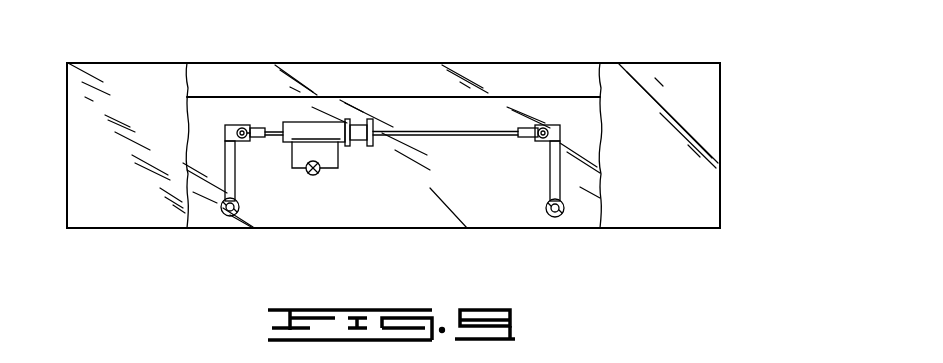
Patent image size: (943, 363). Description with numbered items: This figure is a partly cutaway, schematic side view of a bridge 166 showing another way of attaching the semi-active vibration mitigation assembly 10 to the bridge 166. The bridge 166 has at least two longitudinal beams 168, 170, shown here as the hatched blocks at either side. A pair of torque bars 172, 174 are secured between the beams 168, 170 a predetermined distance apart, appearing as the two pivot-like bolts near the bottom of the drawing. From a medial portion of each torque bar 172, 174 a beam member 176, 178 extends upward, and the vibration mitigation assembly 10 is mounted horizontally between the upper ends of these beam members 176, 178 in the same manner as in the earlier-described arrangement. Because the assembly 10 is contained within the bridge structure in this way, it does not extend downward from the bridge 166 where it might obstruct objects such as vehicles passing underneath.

The vibration mitigation assembly 10 is at (327, 118).
The bridge 166 is at (443, 63).
The longitudinal beam 168 is at (137, 215).
The longitudinal beam 170 is at (585, 212).
The torque bar 172 is at (237, 213).
The torque bar 174 is at (548, 217).
The beam member 176 is at (225, 137).
The beam member 178 is at (561, 138).